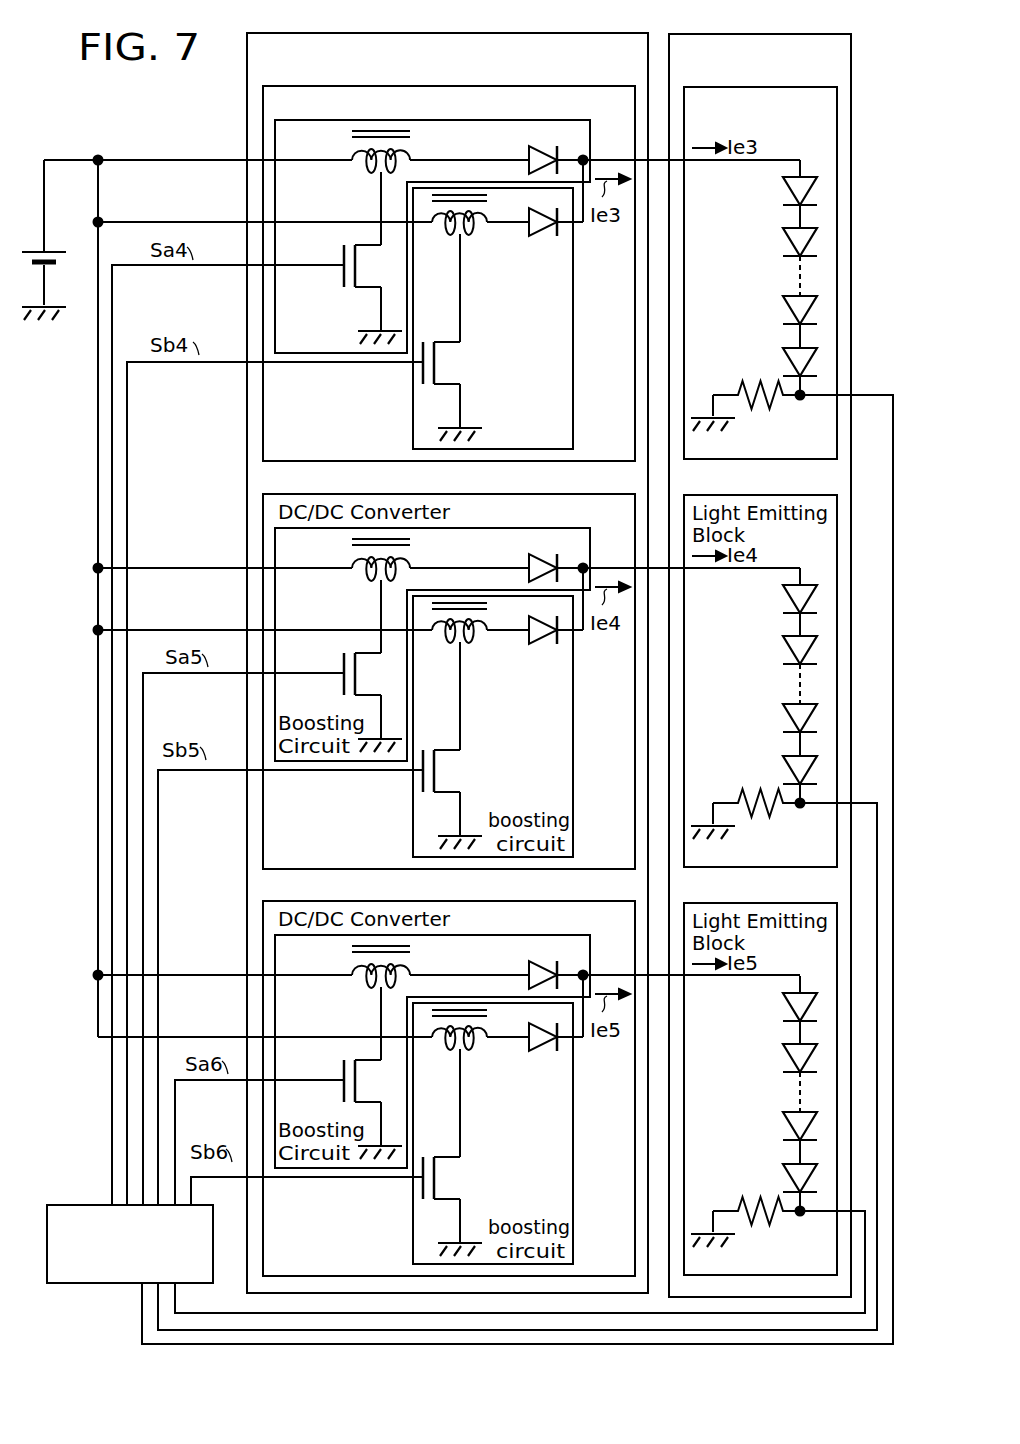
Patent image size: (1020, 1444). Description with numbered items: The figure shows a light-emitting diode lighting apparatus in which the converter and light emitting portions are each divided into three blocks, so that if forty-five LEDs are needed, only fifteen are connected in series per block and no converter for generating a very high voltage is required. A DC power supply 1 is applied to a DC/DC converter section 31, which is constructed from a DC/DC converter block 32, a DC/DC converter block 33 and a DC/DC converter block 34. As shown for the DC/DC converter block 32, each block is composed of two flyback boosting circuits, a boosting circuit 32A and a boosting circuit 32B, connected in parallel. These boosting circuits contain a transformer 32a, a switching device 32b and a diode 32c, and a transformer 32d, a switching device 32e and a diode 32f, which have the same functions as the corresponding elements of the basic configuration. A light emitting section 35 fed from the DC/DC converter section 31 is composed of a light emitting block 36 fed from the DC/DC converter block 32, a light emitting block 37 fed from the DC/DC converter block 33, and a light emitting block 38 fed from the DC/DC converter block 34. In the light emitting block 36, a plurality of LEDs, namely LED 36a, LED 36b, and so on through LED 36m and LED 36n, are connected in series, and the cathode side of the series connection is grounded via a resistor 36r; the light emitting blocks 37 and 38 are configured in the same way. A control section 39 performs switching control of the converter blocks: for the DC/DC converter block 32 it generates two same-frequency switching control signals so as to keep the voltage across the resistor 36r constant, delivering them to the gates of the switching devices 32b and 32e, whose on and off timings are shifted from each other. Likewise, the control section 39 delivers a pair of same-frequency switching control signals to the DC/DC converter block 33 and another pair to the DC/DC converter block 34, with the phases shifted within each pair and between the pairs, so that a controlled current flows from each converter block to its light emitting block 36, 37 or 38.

The DC power supply 1 is at (57, 249).
The DC/DC converter section 31 is at (531, 12).
The DC/DC converter block 32 is at (449, 260).
The boosting circuit 32A is at (600, 116).
The boosting circuit 32B is at (598, 406).
The transformer 32a is at (348, 154).
The switching device 32b is at (374, 287).
The diode 32c is at (529, 152).
The transformer 32d is at (470, 240).
The switching device 32e is at (461, 391).
The diode 32f is at (554, 241).
The DC/DC converter block 33 is at (308, 498).
The DC/DC converter block 34 is at (308, 905).
The light emitting section 35 is at (720, 12).
The light emitting block 36 is at (760, 259).
The LED 36a is at (781, 182).
The LED 36b is at (781, 234).
The LED 36m is at (781, 302).
The LED 36n is at (781, 354).
The resistor 36r is at (760, 404).
The light emitting block 37 is at (762, 502).
The light emitting block 38 is at (762, 907).
The control section 39 is at (86, 1285).